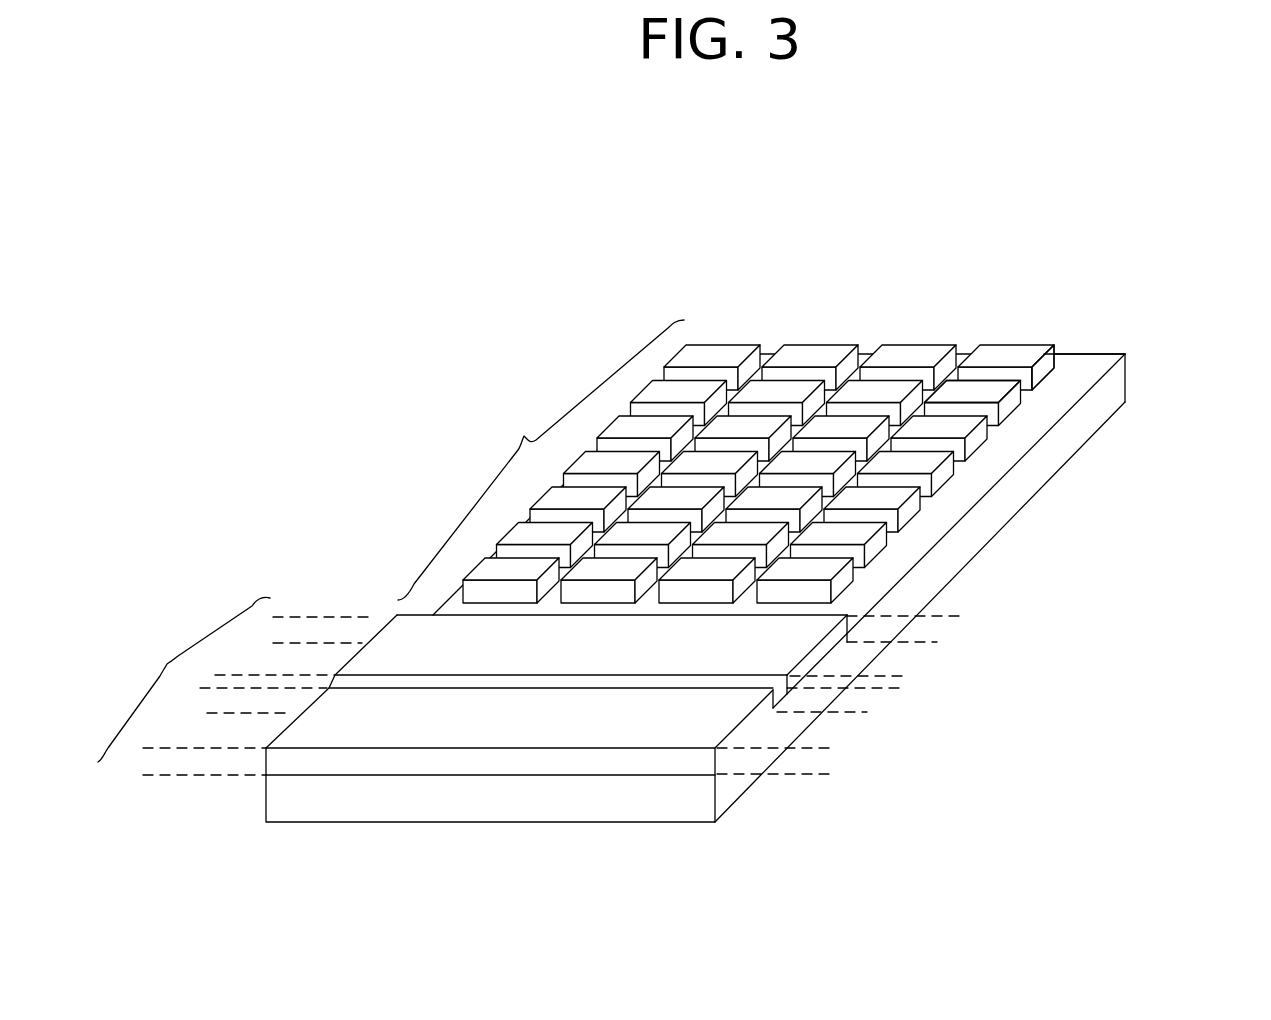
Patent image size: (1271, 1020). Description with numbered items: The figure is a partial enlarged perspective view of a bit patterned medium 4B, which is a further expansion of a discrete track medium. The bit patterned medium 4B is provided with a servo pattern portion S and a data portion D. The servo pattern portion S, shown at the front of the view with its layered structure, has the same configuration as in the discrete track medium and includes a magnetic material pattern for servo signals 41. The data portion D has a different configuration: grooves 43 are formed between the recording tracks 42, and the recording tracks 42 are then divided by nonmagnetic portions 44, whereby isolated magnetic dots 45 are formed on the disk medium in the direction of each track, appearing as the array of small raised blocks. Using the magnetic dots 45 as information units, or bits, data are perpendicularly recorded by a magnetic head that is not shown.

The magnetic material pattern for servo signals 41 is at (643, 762).
The bit patterned medium 4B is at (993, 520).
The recording tracks 42 is at (1037, 333).
The grooves 43 is at (960, 350).
The nonmagnetic portions 44 is at (1037, 375).
The magnetic dots 45 is at (970, 392).
The data portion D is at (541, 460).
The servo pattern portion S is at (184, 679).